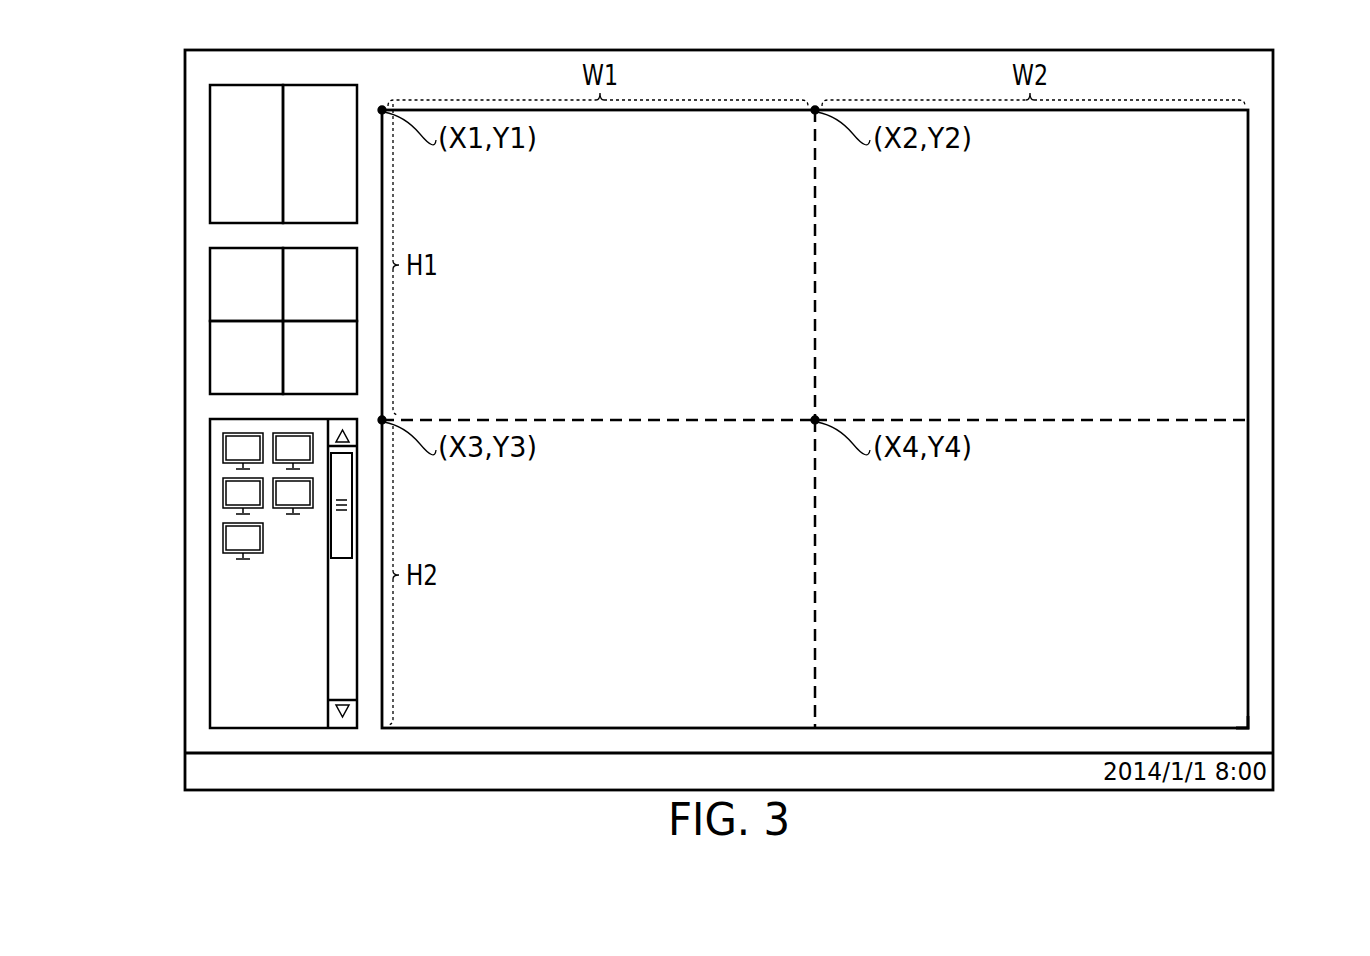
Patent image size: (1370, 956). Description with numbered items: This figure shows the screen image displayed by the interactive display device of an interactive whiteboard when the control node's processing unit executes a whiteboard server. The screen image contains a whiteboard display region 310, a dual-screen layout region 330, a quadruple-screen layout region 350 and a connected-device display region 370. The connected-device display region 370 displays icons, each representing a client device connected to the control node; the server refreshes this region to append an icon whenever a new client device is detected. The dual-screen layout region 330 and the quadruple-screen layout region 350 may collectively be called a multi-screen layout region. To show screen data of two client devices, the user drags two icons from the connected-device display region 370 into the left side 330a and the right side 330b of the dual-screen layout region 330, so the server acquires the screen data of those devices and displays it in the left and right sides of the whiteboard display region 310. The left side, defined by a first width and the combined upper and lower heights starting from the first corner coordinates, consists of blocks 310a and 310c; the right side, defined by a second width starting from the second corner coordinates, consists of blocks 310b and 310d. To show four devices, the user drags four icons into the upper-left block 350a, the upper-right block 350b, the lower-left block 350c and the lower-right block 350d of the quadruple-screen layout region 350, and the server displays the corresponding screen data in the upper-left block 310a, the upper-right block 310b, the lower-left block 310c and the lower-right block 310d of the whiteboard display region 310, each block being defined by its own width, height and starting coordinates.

The whiteboard display region 310 is at (1248, 265).
The upper-left block 310a is at (627, 279).
The upper-right block 310b is at (1061, 279).
The lower-left block 310c is at (627, 589).
The lower-right block 310d is at (1061, 589).
The dual-screen layout region 330 is at (210, 157).
The left side of the dual-screen layout region 330a is at (275, 168).
The right side of the dual-screen layout region 330b is at (348, 168).
The quadruple-screen layout region 350 is at (210, 321).
The upper-left block 350a is at (275, 299).
The upper-right block 350b is at (348, 299).
The lower-left block 350c is at (275, 373).
The lower-right block 350d is at (348, 373).
The connected-device display region 370 is at (210, 575).